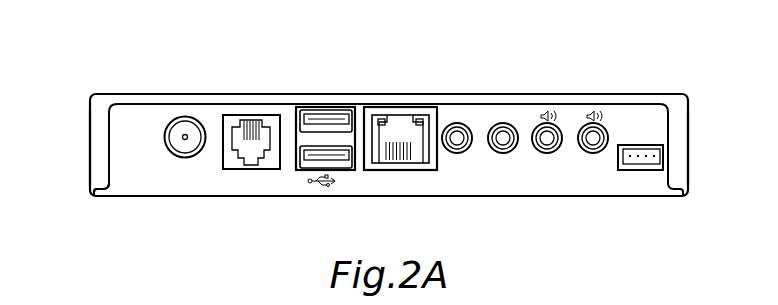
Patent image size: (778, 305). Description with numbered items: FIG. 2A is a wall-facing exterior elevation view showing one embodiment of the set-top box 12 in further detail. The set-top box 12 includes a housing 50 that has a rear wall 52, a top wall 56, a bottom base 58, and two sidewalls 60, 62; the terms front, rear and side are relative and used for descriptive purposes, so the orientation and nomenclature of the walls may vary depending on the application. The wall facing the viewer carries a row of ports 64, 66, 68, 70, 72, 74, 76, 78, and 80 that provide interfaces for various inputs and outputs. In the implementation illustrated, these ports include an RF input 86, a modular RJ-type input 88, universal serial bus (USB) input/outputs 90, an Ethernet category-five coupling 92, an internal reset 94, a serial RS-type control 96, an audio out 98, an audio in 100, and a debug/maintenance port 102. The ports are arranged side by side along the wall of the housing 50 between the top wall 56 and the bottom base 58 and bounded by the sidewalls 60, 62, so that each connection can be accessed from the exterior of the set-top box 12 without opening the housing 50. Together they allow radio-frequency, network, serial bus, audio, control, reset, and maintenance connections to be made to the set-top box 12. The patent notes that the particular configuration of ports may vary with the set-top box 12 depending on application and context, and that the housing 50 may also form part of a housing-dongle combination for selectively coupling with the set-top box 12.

The set-top box 12 is at (94, 80).
The housing 50 is at (673, 90).
The rear wall 52 is at (127, 183).
The top wall 56 is at (155, 94).
The bottom base 58 is at (270, 197).
The sidewall 60 is at (688, 136).
The sidewall 62 is at (90, 139).
The port 64 is at (185, 117).
The port 66 is at (252, 122).
The port 68 is at (330, 107).
The port 70 is at (404, 107).
The port 72 is at (457, 123).
The port 74 is at (503, 123).
The port 76 is at (548, 123).
The port 78 is at (594, 123).
The port 80 is at (643, 172).
The RF input 86 is at (183, 160).
The RJ-45 input 88 is at (232, 175).
The universal serial bus (USB) input/outputs 90 is at (317, 173).
The Ethernet category 5 (Cat 5) coupling 92 is at (402, 171).
The internal reset 94 is at (459, 165).
The RS232 control 96 is at (505, 165).
The audio out 98 is at (552, 165).
The audio in 100 is at (597, 165).
The debug/maintenance port 102 is at (665, 162).